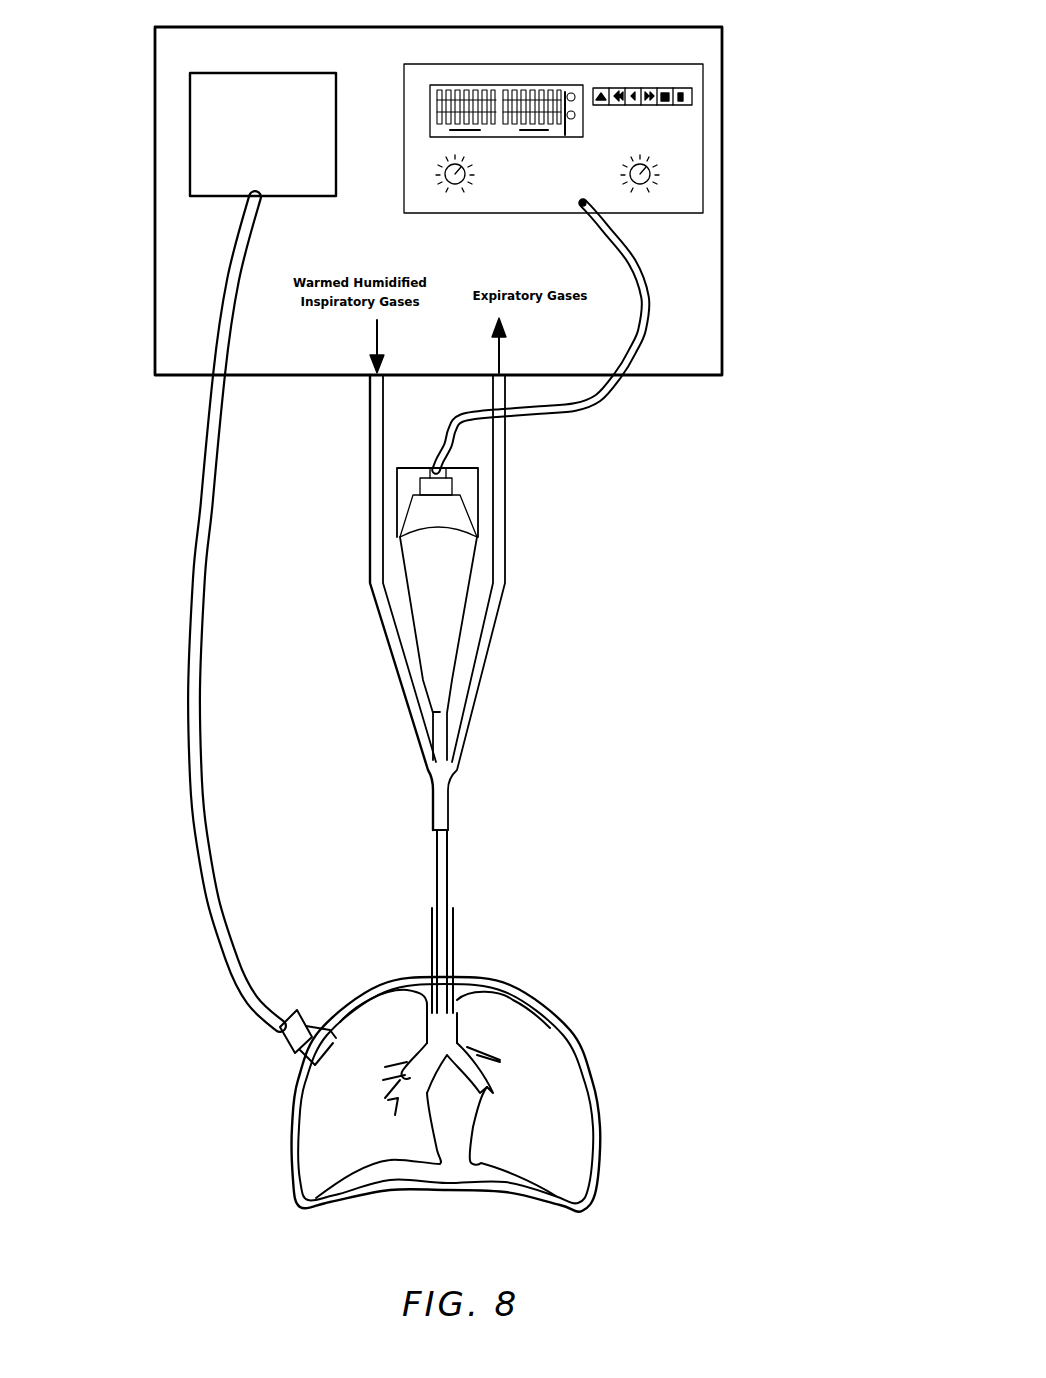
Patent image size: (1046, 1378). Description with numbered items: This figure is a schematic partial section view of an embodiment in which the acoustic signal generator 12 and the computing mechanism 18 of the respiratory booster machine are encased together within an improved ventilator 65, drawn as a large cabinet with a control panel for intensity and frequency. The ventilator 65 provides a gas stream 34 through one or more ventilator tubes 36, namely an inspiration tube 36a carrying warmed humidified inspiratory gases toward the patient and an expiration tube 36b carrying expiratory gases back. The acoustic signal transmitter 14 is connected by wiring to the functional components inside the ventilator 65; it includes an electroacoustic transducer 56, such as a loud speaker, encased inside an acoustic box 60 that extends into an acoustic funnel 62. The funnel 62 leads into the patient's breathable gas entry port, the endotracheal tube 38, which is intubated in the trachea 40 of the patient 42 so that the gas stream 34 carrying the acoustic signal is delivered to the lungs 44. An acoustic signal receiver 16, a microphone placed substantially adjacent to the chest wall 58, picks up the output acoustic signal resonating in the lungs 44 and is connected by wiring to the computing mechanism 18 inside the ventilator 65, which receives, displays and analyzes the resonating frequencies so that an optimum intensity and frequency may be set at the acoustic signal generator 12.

The acoustic signal generator 12 is at (662, 150).
The acoustic signal transmitter 14 is at (472, 612).
The acoustic signal receiver 16 is at (302, 1024).
The computing mechanism 18 is at (218, 113).
The gas stream 34 is at (440, 768).
The ventilator tubes 36 is at (438, 602).
The inspiration tube 36a is at (376, 557).
The expiration tube 36b is at (503, 562).
The endotracheal tube 38 is at (432, 896).
The trachea 40 is at (458, 944).
The patient 42 is at (535, 1002).
The lungs 44 is at (535, 1080).
The electroacoustic transducer 56 is at (452, 512).
The chest wall 58 is at (438, 1091).
The acoustic box 60 is at (397, 485).
The acoustic funnel 62 is at (448, 645).
The ventilator 65 is at (726, 284).